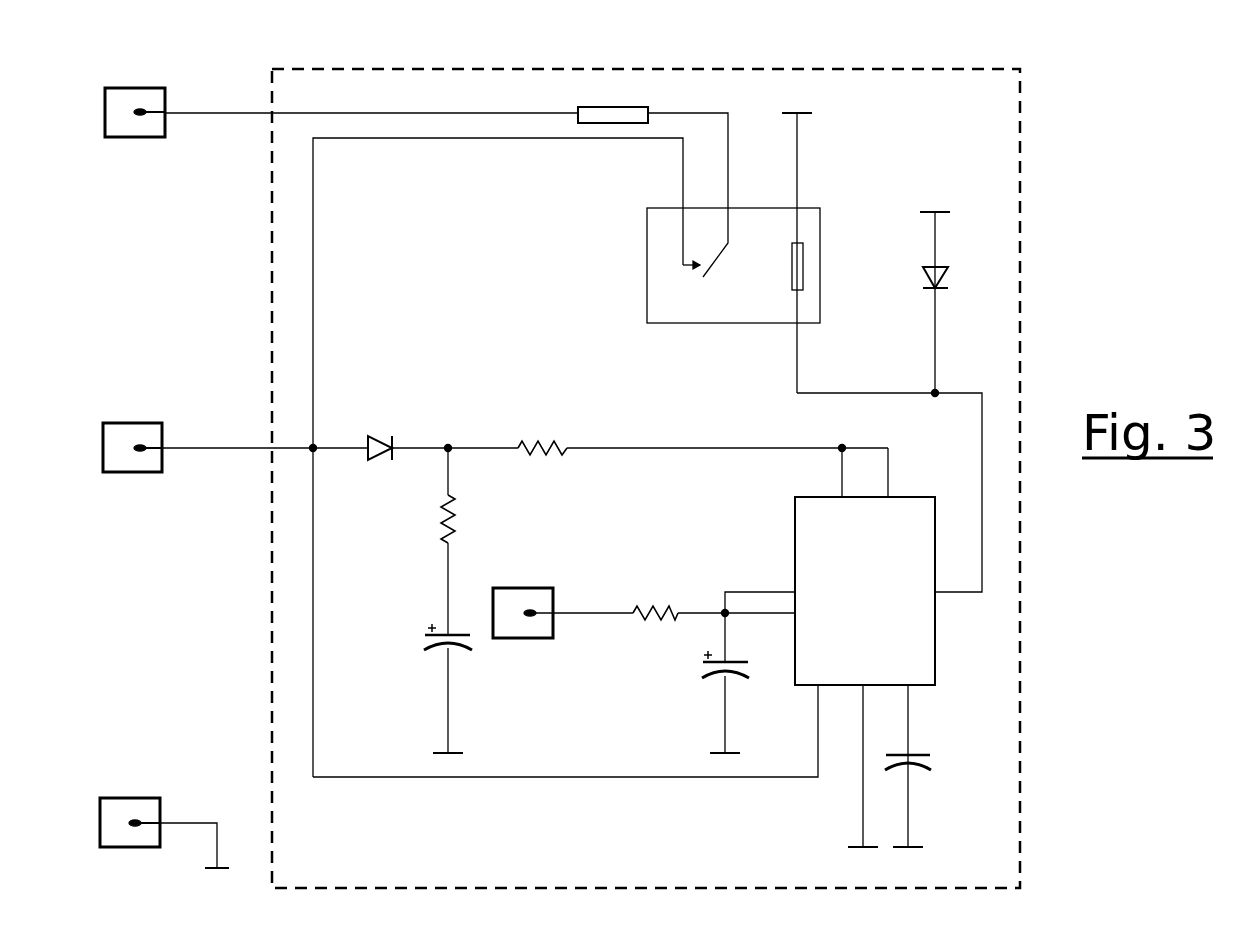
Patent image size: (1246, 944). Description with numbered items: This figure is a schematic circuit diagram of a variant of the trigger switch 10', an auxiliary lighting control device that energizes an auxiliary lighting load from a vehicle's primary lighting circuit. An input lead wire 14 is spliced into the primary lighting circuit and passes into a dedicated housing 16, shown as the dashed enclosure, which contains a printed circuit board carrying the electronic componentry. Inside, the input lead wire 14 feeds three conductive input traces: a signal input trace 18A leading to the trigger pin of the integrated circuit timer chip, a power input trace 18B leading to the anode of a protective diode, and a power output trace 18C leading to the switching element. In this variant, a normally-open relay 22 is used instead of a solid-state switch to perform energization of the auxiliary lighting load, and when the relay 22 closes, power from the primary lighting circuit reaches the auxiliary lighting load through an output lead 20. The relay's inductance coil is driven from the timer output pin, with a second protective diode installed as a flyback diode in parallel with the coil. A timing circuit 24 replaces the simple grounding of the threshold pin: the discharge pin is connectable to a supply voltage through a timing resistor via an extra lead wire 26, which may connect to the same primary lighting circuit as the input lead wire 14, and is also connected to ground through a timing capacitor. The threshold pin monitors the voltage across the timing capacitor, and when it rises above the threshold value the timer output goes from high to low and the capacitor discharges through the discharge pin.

The trigger switch variant 10' is at (640, 458).
The housing 16 is at (1020, 298).
The output lead 20 is at (218, 108).
The input lead wire 14 is at (203, 443).
The signal input trace 18A is at (547, 775).
The power input trace 18B is at (328, 445).
The power output trace 18C is at (312, 250).
The normally-open relay 22 is at (722, 302).
The timing circuit 24 is at (717, 575).
The extra lead wire 26 is at (566, 610).